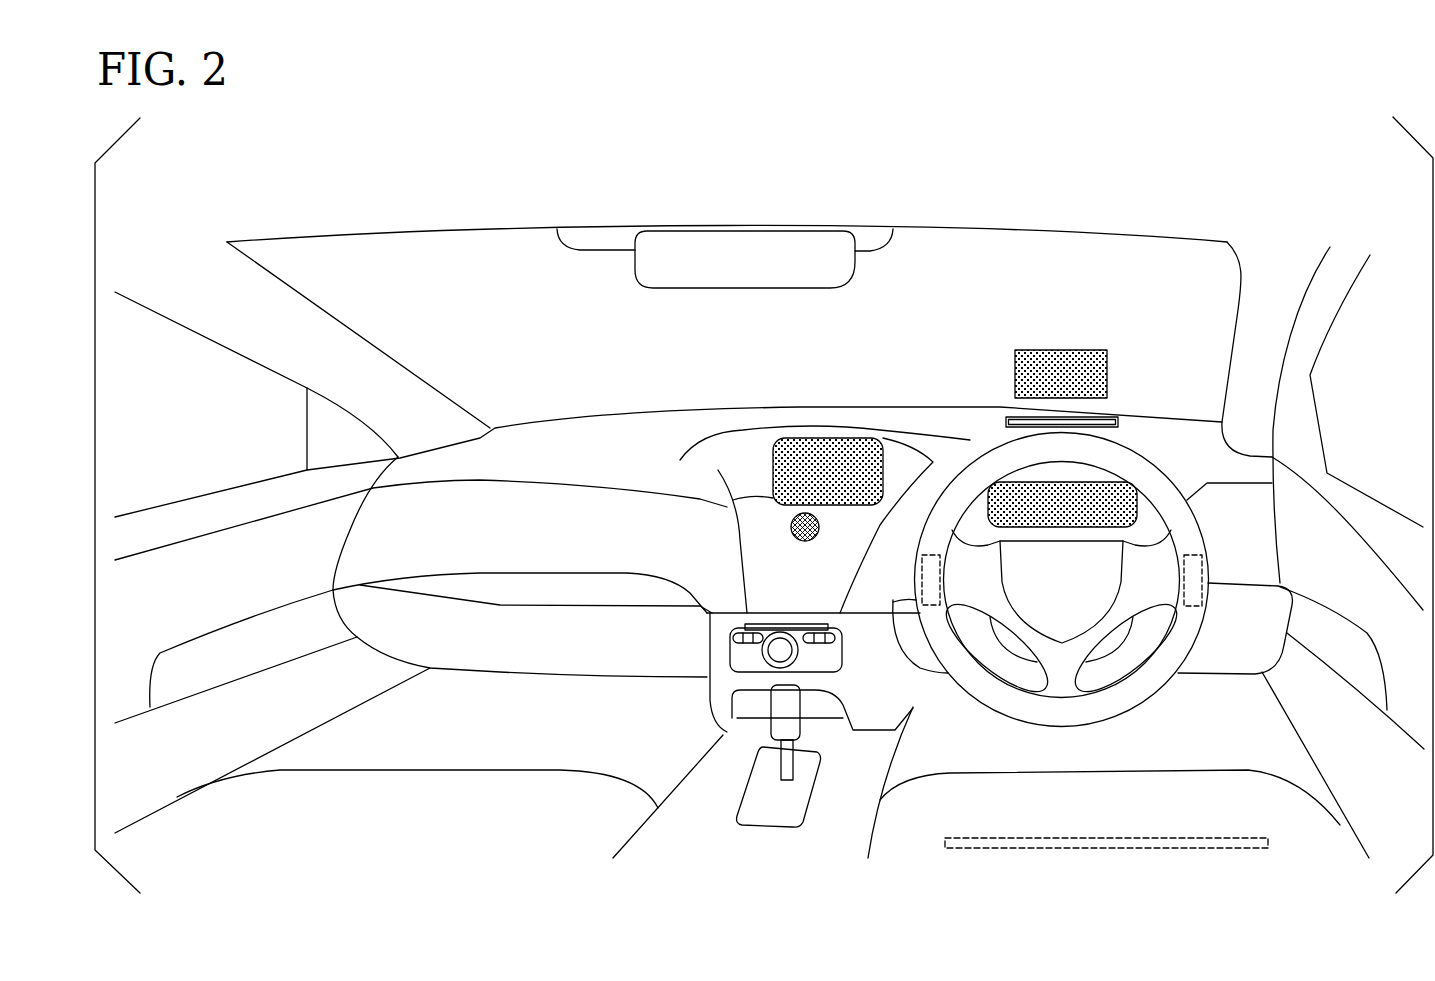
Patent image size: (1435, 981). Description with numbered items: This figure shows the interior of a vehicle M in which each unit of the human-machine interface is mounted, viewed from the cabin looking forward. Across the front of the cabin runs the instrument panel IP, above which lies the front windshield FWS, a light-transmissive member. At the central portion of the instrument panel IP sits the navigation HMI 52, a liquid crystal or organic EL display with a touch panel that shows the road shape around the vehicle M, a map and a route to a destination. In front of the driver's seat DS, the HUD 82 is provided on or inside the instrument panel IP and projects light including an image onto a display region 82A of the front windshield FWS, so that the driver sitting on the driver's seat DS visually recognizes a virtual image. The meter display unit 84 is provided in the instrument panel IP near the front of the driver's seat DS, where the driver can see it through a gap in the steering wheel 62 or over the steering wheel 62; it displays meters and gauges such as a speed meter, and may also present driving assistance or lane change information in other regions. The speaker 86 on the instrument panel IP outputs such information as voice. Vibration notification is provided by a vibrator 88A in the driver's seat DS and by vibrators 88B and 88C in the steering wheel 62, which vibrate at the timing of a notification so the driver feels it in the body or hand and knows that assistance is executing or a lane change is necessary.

The front windshield FWS is at (541, 278).
The instrument panel IP is at (606, 446).
The vehicle M is at (1320, 212).
The driver's seat DS is at (1123, 813).
The navigation HMI 52 is at (829, 438).
The steering wheel 62 is at (1148, 700).
The HUD 82 is at (1120, 420).
The display region 82A is at (1061, 350).
The meter display unit 84 is at (1013, 483).
The speaker 86 is at (790, 523).
The vibrator 88A is at (1229, 836).
The vibrator 88B is at (920, 570).
The vibrator 88C is at (1205, 593).